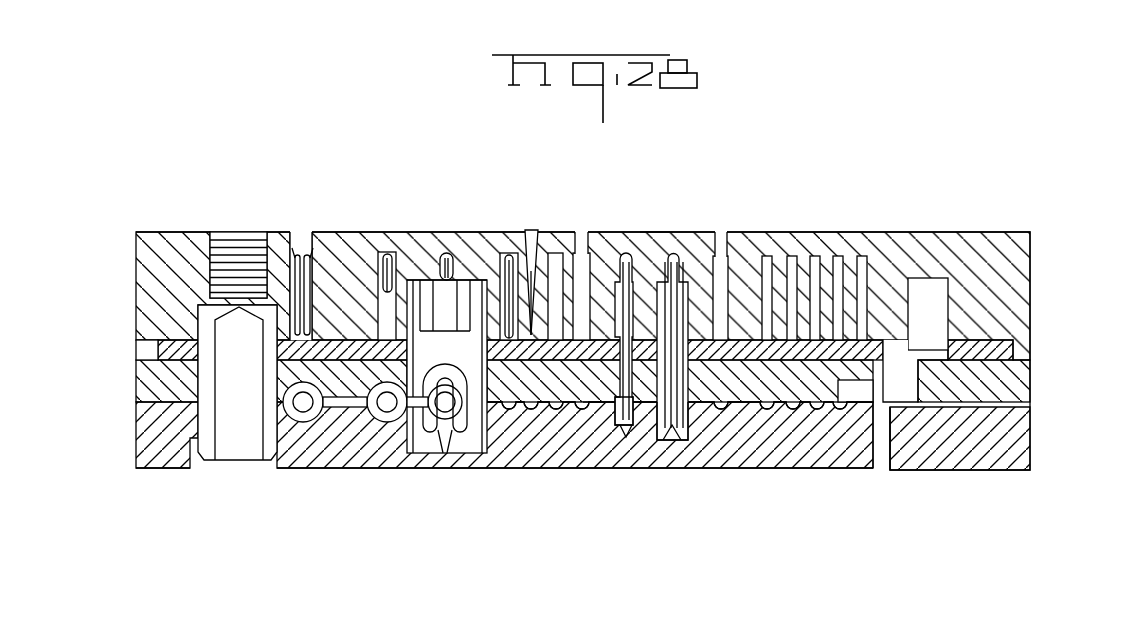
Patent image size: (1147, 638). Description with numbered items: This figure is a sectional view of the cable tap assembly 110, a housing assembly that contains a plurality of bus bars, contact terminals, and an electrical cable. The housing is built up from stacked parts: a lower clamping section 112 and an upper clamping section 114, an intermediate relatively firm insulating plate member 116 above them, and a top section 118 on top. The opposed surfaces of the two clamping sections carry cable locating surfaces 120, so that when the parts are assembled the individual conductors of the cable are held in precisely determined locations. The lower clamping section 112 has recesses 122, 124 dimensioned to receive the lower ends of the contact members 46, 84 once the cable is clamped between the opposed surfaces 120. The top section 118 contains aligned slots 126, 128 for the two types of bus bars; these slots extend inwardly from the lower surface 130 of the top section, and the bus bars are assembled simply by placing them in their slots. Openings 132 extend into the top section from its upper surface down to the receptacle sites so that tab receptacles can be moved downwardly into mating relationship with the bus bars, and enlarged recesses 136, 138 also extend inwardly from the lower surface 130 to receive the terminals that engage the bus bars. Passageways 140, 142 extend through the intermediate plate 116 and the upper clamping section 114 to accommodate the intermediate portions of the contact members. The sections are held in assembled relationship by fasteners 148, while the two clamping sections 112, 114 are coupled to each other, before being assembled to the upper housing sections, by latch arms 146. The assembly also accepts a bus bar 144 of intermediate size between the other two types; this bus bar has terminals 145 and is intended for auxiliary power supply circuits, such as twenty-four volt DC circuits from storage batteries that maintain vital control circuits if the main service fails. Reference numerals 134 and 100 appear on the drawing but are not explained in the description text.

The cable tap assembly 110 is at (822, 200).
The lower clamping section 112 is at (1017, 457).
The upper clamping section 114 is at (1020, 393).
The intermediate insulating plate member 116 is at (1005, 355).
The top section 118 is at (1017, 318).
The cable locating surfaces 120 is at (768, 405).
The recess 122 is at (440, 422).
The recess 124 is at (626, 432).
The slot 126 is at (870, 262).
The slot 128 is at (362, 300).
The lower surface 130 is at (950, 345).
The opening 132 is at (305, 238).
The contact pin 134 is at (531, 235).
The enlarged recess 136 is at (420, 285).
The enlarged recess 138 is at (614, 250).
The passageway 140 is at (455, 405).
The passageway 142 is at (597, 400).
The bus bar 144 is at (690, 250).
The terminals 145 is at (673, 432).
The latch arms 146 is at (860, 465).
The fasteners 148 is at (267, 407).
The conductor 100 is at (304, 425).
The contact member 84 is at (462, 283).
The contact member 46 is at (655, 240).